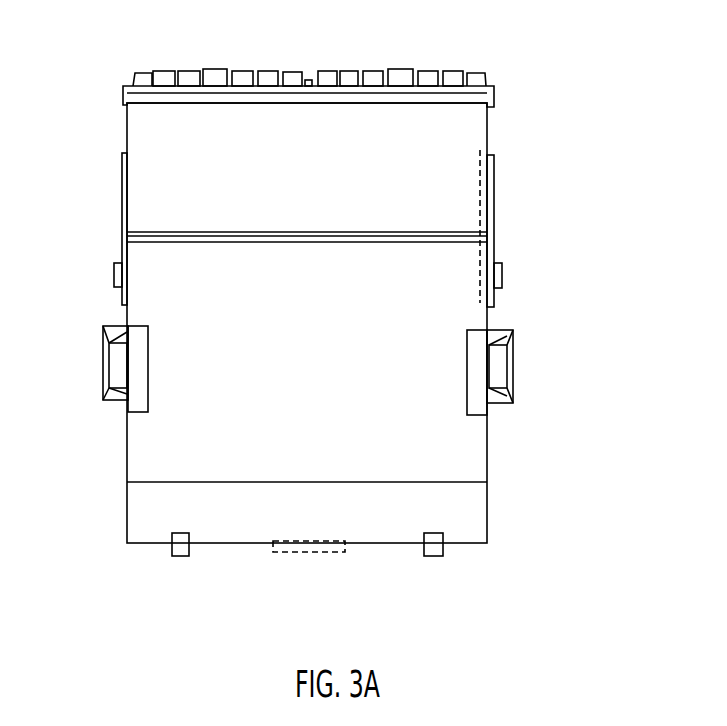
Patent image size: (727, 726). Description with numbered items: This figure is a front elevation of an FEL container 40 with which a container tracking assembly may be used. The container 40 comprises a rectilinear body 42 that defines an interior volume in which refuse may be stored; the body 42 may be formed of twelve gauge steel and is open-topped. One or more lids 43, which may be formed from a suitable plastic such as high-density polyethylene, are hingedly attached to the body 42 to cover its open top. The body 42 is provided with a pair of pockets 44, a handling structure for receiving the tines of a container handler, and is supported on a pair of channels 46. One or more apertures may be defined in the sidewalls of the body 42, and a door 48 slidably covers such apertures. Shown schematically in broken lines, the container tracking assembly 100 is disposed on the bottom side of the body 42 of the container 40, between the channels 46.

The FEL container 40 is at (547, 63).
The body 42 is at (457, 461).
The lids 43 is at (215, 70).
The pockets 44 is at (117, 367).
The channels 46 is at (181, 558).
The door 48 is at (492, 200).
The container tracking assembly 100 is at (287, 553).